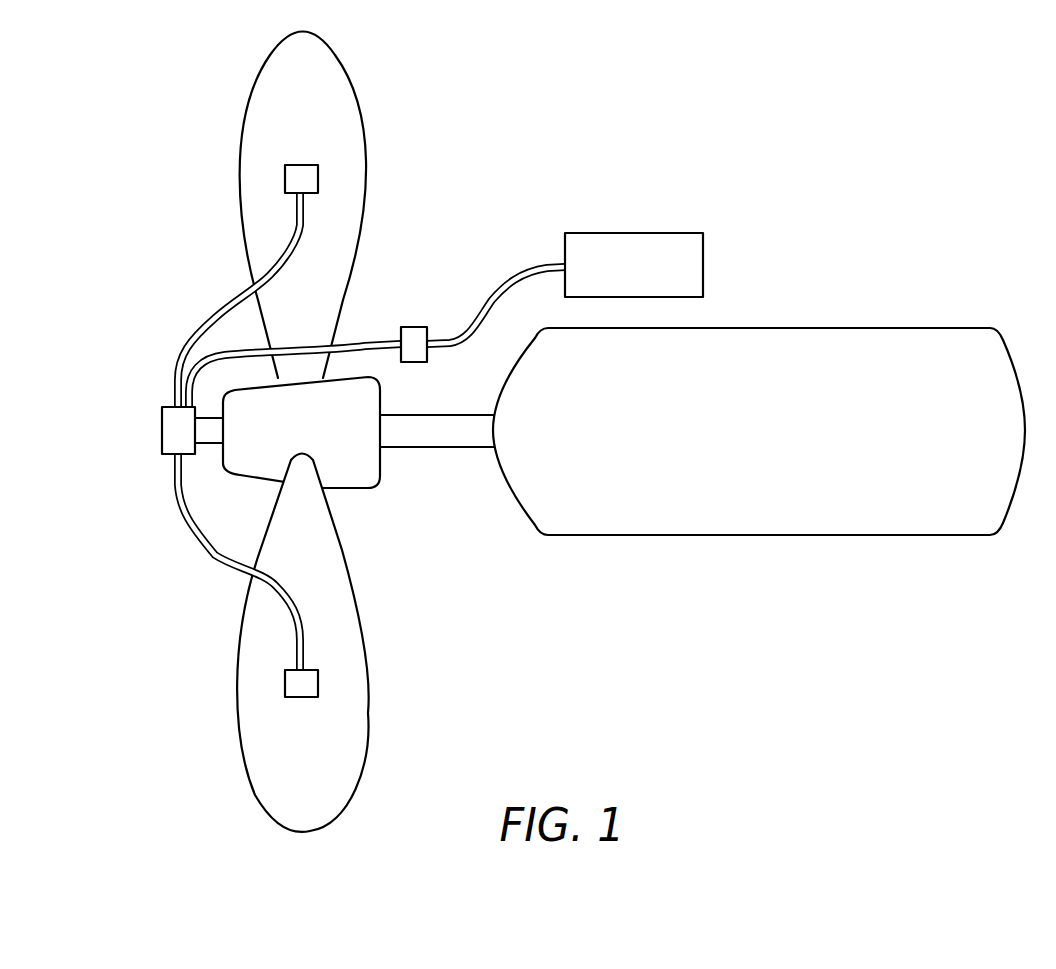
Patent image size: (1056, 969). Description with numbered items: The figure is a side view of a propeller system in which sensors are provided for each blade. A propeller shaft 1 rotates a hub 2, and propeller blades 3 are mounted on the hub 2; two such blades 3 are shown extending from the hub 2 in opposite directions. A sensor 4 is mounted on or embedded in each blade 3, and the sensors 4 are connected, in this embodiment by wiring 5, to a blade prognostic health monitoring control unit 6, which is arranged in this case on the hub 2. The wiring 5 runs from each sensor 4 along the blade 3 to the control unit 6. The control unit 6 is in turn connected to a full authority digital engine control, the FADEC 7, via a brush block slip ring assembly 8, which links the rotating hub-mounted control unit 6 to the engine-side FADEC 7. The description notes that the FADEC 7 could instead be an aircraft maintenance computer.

The propeller shaft 1 is at (972, 328).
The hub 2 is at (380, 487).
The propeller blade 3 is at (368, 713).
The sensor 4 is at (303, 697).
The wiring 5 is at (198, 540).
The blade prognostic health monitoring (BPHM) control unit 6 is at (162, 430).
The FADEC 7 is at (683, 233).
The brush block slip ring assembly 8 is at (413, 327).